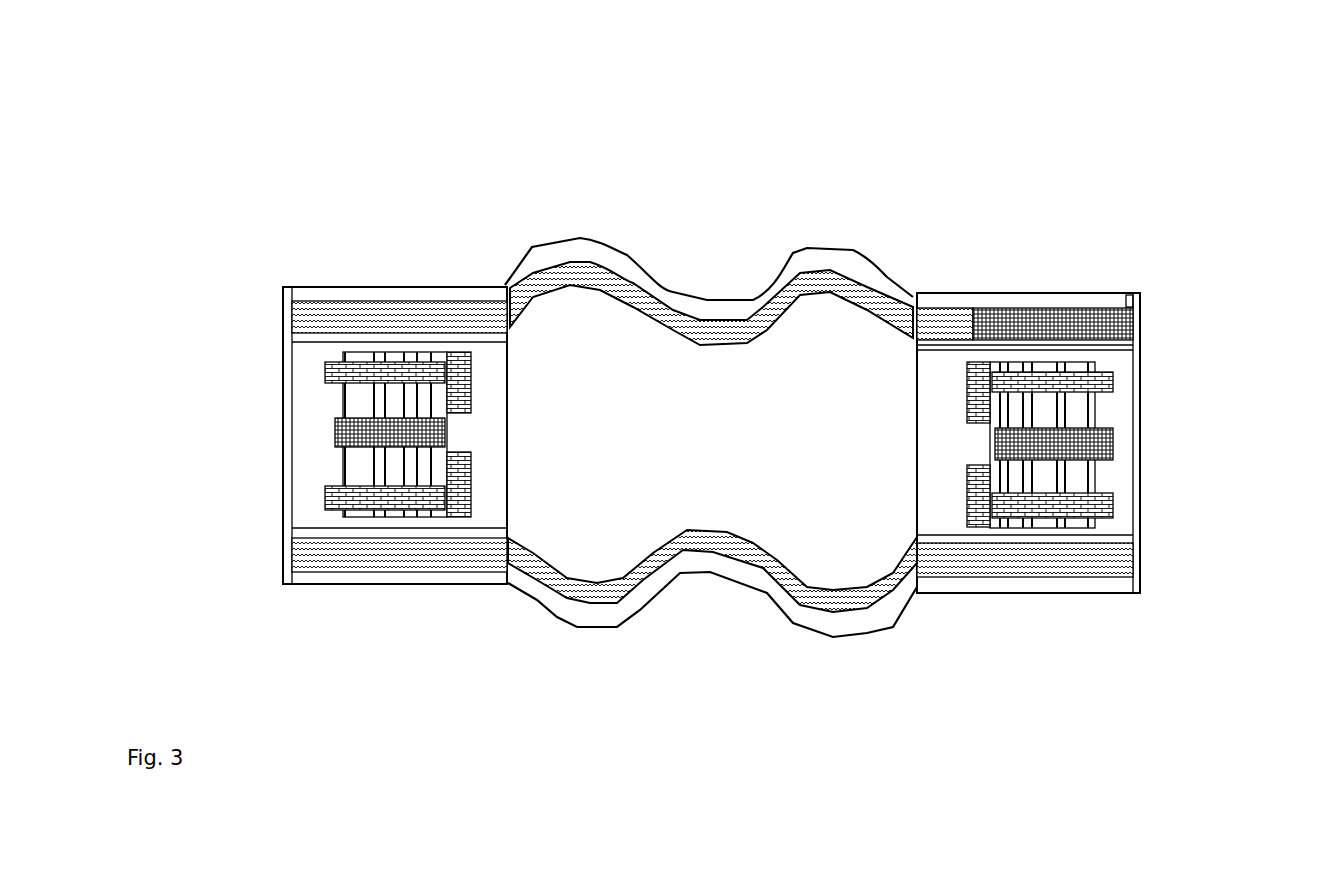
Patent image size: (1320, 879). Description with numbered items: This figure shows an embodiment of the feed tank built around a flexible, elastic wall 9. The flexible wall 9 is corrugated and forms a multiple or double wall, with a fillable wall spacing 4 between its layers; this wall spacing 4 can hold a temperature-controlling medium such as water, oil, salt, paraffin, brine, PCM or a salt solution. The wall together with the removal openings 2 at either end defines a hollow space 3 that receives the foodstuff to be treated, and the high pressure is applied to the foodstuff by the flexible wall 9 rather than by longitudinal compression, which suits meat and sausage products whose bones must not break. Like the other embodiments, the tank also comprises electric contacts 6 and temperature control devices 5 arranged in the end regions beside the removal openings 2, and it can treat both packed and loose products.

The removal openings 2 is at (295, 418).
The hollow space 3 is at (720, 460).
The wall spacing 4 is at (673, 314).
The temperature control devices 5 is at (995, 323).
The electric contacts 6 is at (322, 377).
The flexible wall 9 is at (625, 243).